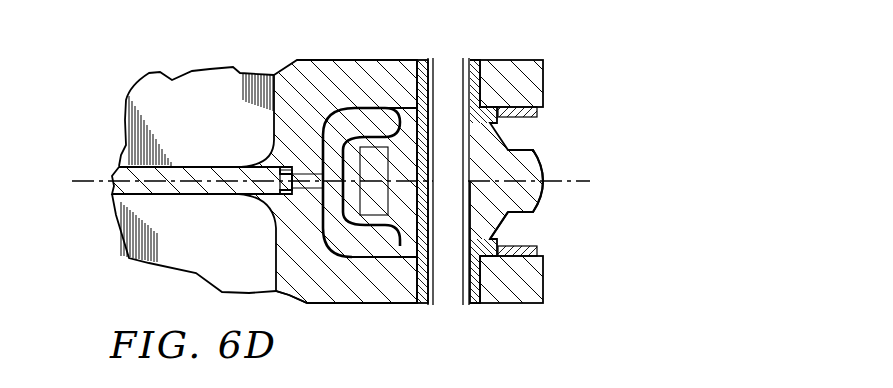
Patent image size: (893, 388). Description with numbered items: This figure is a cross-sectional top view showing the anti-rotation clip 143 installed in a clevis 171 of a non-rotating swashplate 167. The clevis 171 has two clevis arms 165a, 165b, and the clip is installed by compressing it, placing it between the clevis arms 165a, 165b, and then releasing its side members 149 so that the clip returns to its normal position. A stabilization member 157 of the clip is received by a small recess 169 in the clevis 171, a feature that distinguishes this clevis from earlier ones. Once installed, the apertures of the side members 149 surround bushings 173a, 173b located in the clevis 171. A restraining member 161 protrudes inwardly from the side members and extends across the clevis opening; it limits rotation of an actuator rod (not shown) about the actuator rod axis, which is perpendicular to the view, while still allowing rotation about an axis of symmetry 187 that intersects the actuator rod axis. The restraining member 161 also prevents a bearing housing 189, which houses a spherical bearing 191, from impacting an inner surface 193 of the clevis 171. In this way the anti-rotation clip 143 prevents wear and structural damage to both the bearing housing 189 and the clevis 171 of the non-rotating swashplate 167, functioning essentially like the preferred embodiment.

The anti-rotation clip 143 is at (387, 110).
The side member 149 is at (538, 112).
The stabilization member 157 is at (276, 232).
The restraining member 161 is at (440, 140).
The clevis arm 165a is at (533, 303).
The clevis arm 165b is at (540, 74).
The non-rotating swashplate 167 is at (192, 73).
The recess 169 is at (256, 200).
The clevis 171 is at (612, 133).
The bushing 173a is at (420, 297).
The bushing 173b is at (473, 72).
The axis of symmetry 187 is at (87, 173).
The bearing housing 189 is at (542, 198).
The spherical bearing 191 is at (500, 230).
The inner surface 193 is at (287, 126).